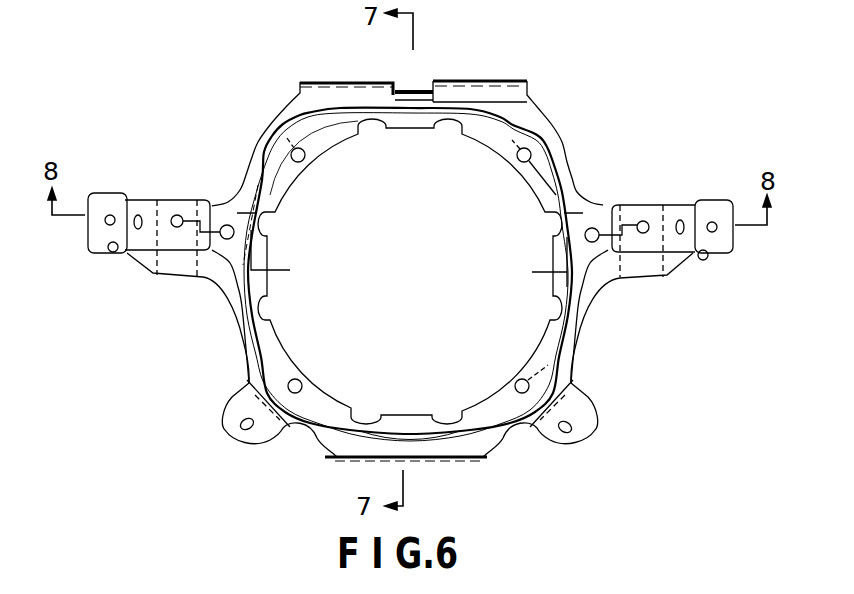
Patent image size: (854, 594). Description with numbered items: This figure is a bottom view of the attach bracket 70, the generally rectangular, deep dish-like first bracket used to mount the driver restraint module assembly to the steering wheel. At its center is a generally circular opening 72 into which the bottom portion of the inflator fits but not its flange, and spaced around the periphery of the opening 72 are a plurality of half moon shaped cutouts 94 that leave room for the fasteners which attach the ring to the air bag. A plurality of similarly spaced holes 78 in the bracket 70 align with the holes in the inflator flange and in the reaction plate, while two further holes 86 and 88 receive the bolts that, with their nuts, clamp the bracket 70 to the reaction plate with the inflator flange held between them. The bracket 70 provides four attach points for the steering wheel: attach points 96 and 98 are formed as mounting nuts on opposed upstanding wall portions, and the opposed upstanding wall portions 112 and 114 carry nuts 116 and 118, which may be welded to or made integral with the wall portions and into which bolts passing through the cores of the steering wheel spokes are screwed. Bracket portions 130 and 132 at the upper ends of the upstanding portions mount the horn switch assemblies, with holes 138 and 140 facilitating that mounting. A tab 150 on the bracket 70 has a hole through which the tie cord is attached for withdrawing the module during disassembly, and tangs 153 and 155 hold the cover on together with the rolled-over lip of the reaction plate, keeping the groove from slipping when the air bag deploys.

The attach bracket 70 is at (520, 104).
The circular opening 72 is at (523, 185).
The holes 78 is at (304, 161).
The hole 86 is at (224, 225).
The hole 88 is at (598, 229).
The half moon shaped cutouts 94 is at (440, 143).
The attach point 96 is at (680, 218).
The attach point 98 is at (110, 213).
The upstanding wall portion 112 is at (232, 408).
The upstanding wall portion 114 is at (577, 400).
The nut 116 is at (244, 430).
The nut 118 is at (566, 434).
The bracket portion 130 is at (716, 254).
The bracket portion 132 is at (104, 252).
The hole 138 is at (712, 220).
The hole 140 is at (90, 238).
The tab 150 is at (415, 90).
The tang 153 is at (493, 80).
The tang 155 is at (440, 462).